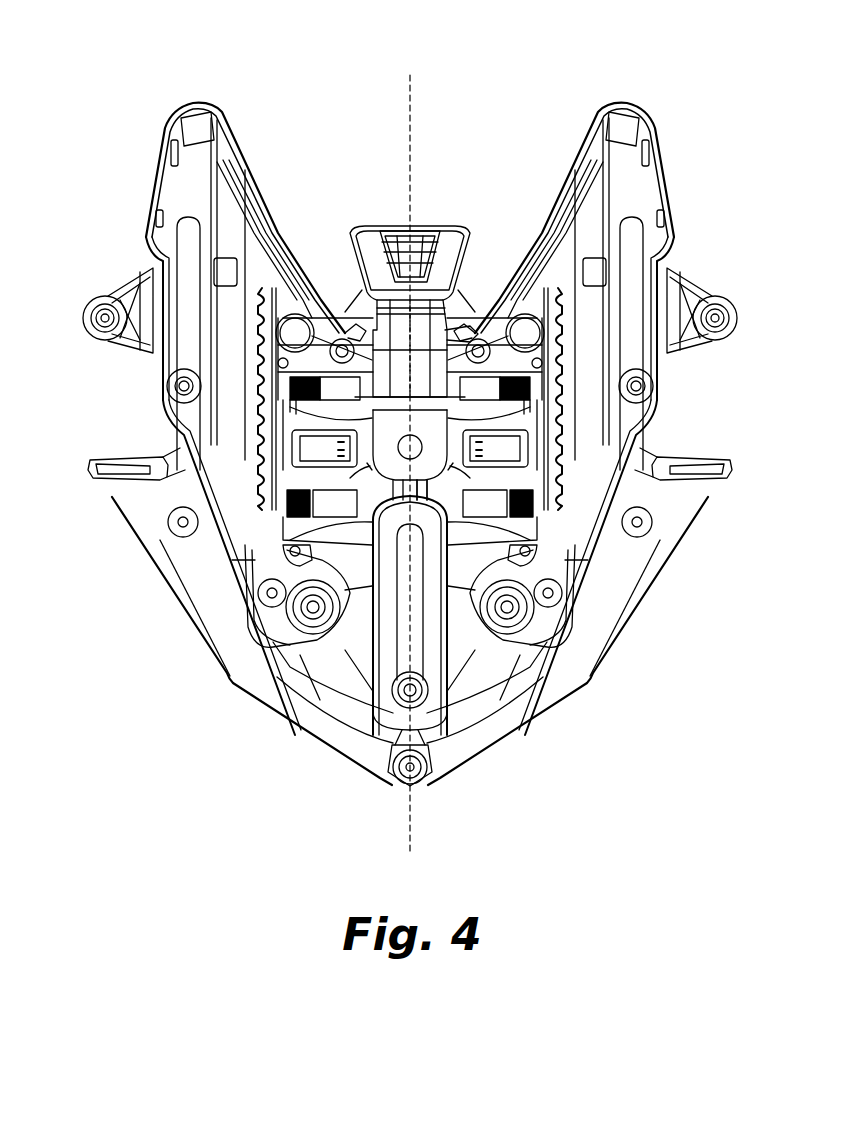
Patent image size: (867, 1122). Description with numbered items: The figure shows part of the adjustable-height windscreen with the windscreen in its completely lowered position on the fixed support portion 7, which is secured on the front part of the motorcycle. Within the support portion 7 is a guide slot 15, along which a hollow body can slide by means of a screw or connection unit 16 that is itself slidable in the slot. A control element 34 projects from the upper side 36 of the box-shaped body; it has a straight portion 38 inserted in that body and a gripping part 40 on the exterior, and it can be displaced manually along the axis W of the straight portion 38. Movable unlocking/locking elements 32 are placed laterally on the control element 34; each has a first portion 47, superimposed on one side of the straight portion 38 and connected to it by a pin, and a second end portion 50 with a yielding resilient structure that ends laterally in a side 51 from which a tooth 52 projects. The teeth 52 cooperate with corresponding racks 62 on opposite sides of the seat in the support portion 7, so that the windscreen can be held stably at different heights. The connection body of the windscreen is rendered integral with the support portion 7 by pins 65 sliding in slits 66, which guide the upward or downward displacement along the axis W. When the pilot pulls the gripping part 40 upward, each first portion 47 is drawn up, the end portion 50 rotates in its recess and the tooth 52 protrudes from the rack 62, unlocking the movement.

The support portion 7 is at (460, 99).
The axis W is at (410, 100).
The guide slot 15 is at (405, 630).
The screw or connection unit 16 is at (418, 693).
The movable elements 32 is at (320, 448).
The control element 34 is at (379, 220).
The upper side 36 is at (456, 330).
The straight portion 38 is at (392, 348).
The gripping part 40 is at (457, 240).
The first portion 47 is at (367, 463).
The second end portion 50 is at (300, 414).
The side 51 is at (355, 478).
The tooth 52 is at (290, 445).
The racks 62 is at (253, 316).
The pins 65 is at (182, 386).
The slits 66 is at (187, 238).